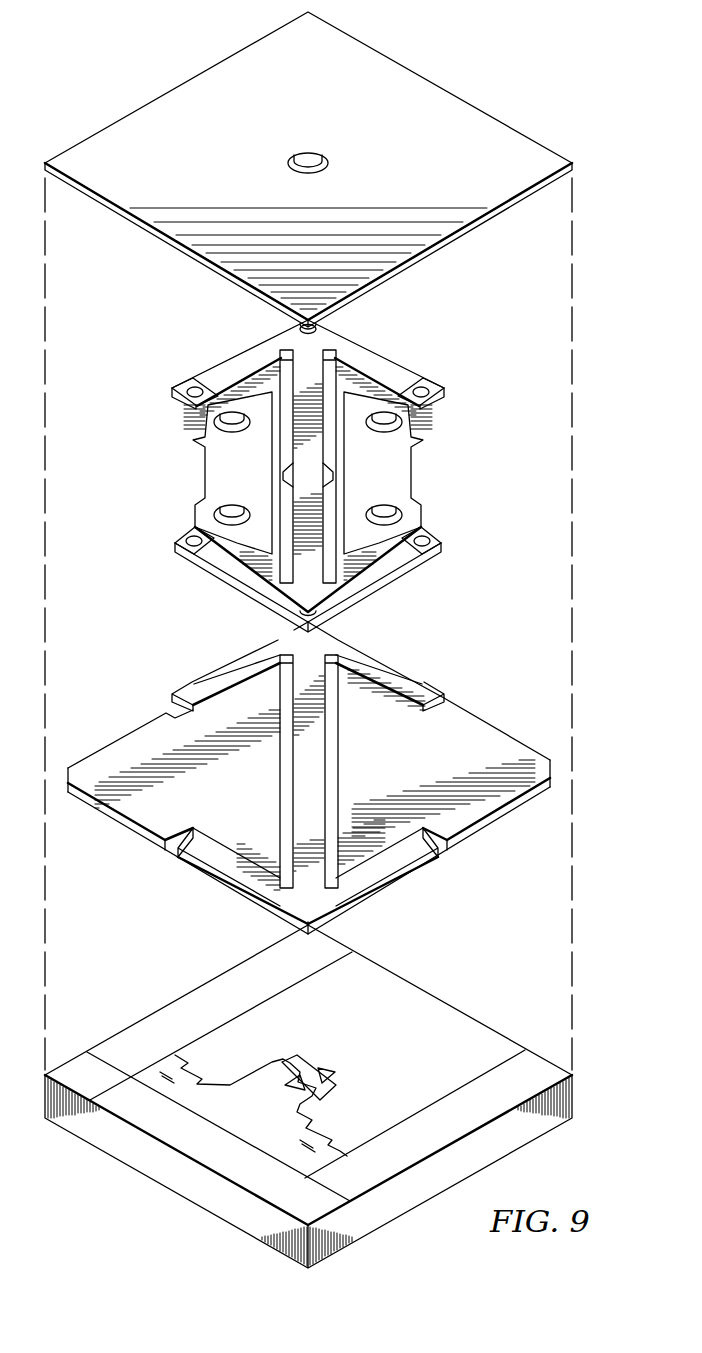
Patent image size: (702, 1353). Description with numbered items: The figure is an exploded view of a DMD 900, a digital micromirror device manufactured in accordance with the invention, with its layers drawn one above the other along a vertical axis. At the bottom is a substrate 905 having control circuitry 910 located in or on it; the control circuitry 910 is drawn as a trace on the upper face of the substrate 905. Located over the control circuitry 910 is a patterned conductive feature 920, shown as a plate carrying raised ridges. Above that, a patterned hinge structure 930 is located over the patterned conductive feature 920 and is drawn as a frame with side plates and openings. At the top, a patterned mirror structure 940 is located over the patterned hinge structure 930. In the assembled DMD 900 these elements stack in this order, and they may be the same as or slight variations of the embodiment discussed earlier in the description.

The DMD 900 is at (583, 106).
The substrate 905 is at (146, 1001).
The control circuitry 910 is at (311, 1062).
The patterned conductive feature 920 is at (150, 679).
The patterned hinge structure 930 is at (154, 428).
The patterned mirror structure 940 is at (146, 92).